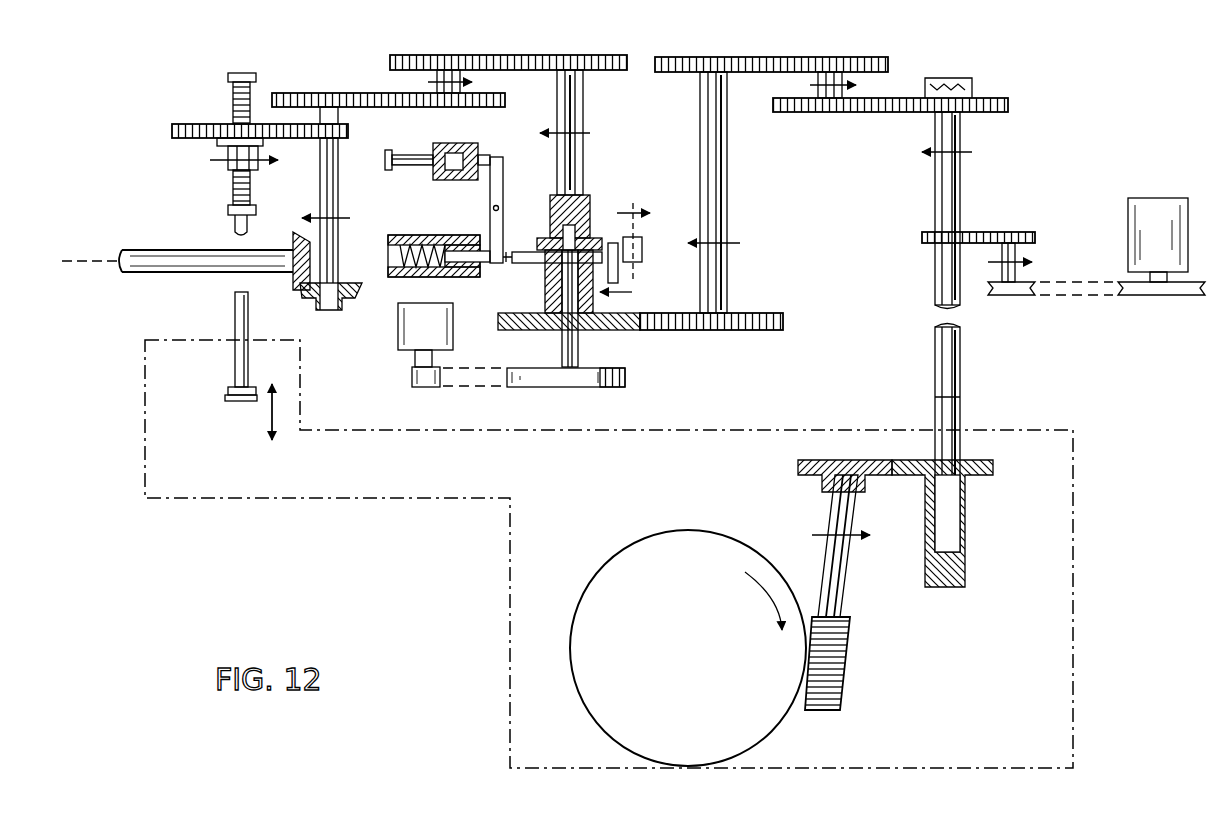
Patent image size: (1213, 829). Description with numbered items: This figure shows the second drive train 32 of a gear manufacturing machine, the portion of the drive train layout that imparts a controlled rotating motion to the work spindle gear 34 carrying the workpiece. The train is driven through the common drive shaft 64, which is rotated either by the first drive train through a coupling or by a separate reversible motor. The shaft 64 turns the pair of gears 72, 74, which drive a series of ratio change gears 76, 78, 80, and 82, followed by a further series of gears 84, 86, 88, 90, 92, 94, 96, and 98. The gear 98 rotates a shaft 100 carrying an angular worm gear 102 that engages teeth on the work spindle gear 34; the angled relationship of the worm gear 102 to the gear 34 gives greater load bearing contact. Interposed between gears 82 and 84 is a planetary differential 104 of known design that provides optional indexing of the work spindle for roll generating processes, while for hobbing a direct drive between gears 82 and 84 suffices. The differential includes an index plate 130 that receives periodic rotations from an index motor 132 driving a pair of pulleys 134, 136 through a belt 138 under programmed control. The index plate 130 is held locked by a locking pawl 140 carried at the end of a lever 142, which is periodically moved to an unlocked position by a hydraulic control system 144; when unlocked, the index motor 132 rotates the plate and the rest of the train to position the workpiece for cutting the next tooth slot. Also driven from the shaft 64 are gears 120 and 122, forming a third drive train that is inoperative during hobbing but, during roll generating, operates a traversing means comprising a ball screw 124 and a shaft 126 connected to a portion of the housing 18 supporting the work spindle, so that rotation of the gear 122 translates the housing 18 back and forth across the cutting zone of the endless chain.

The work spindle housing 18 is at (1073, 600).
The second drive train 32 is at (400, 48).
The work spindle gear 34 is at (595, 580).
The drive shaft 64 is at (150, 272).
The gear 72 is at (292, 288).
The gear 74 is at (346, 285).
The ratio change gear 76 is at (302, 93).
The ratio change gear 78 is at (505, 97).
The ratio change gear 80 is at (462, 55).
The ratio change gear 82 is at (580, 55).
The gear 84 is at (620, 330).
The gear 86 is at (768, 313).
The gear 88 is at (733, 57).
The gear 90 is at (832, 72).
The gear 92 is at (864, 112).
The gear 94 is at (998, 98).
The gear 96 is at (993, 465).
The gear 98 is at (798, 458).
The shaft 100 is at (828, 512).
The angular worm gear 102 is at (850, 692).
The planetary differential 104 is at (602, 215).
The gear 120 is at (348, 131).
The gear 122 is at (172, 128).
The ball screw 124 is at (233, 100).
The shaft 126 is at (235, 362).
The index plate 130 is at (545, 272).
The index motor 132 is at (398, 310).
The pulley 134 is at (422, 388).
The pulley 136 is at (595, 388).
The belt 138 is at (478, 388).
The locking pawl 140 is at (512, 250).
The lever 142 is at (503, 178).
The hydraulic control system 144 is at (468, 143).